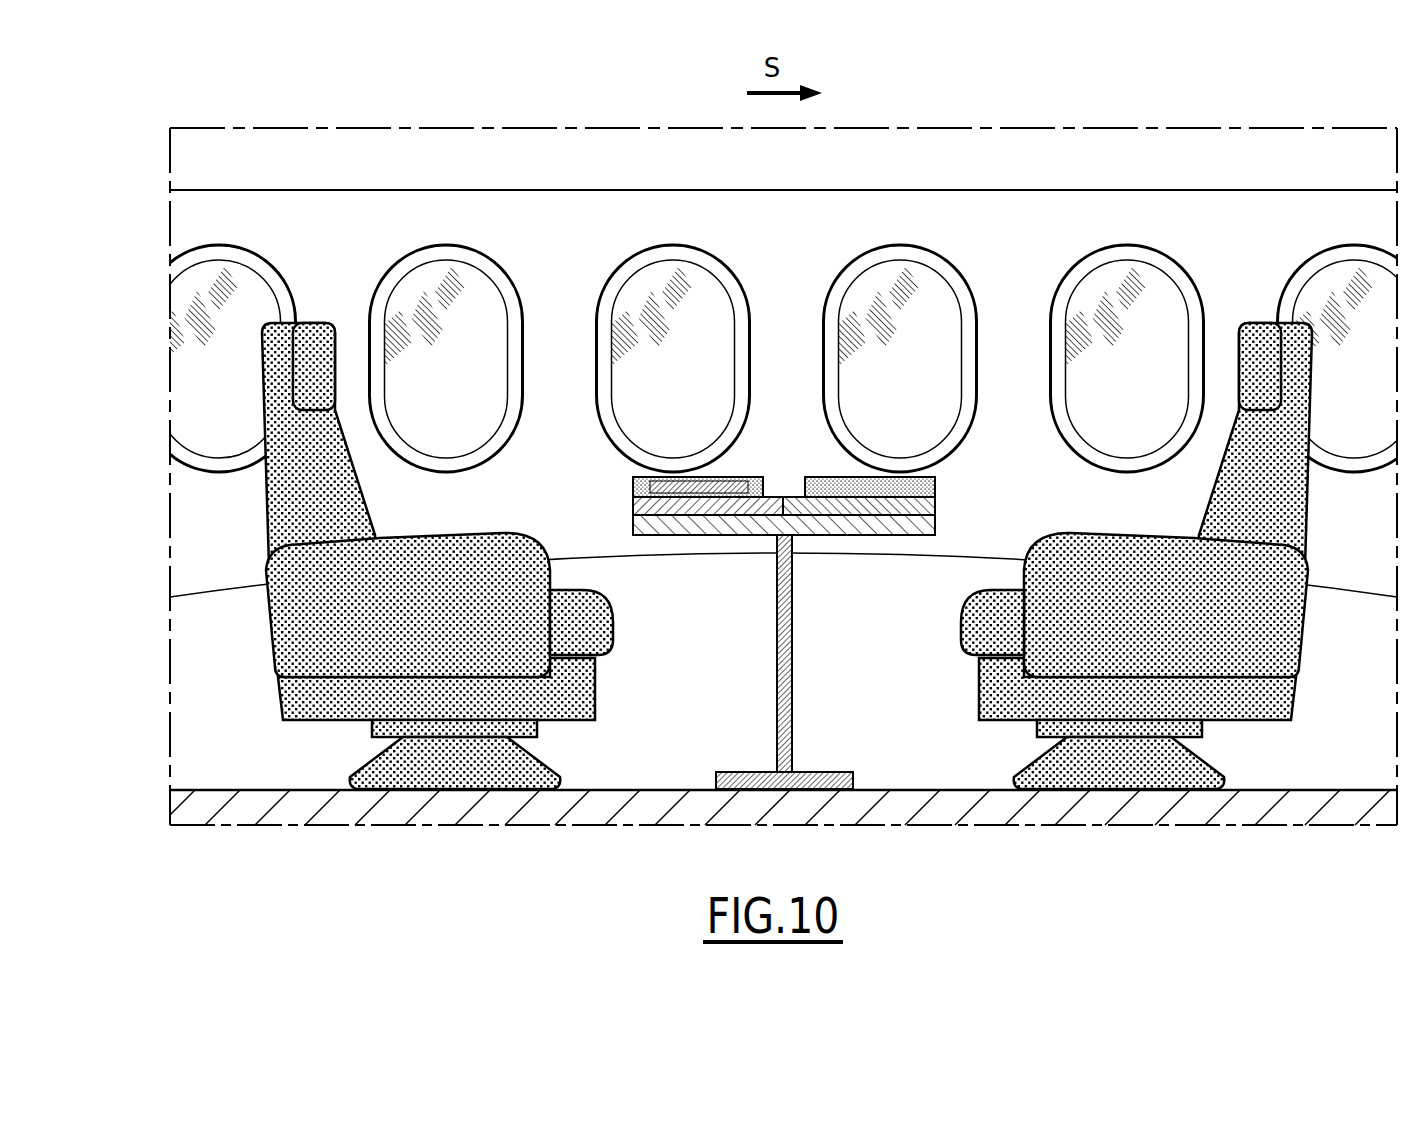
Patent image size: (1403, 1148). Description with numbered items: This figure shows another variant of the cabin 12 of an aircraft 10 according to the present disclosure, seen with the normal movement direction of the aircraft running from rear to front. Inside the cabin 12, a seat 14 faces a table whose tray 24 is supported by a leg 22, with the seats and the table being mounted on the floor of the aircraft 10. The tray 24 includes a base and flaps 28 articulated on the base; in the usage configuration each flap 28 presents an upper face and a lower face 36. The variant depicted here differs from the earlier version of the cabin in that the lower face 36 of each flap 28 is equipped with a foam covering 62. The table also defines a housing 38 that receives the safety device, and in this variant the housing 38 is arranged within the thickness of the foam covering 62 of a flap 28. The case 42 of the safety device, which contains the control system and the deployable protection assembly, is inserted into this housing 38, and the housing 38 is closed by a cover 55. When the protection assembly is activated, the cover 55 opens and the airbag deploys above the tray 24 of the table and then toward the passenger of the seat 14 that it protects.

The aircraft 10 is at (800, 253).
The cabin 12 is at (961, 156).
The seat 14 is at (297, 645).
The leg 22 is at (810, 688).
The tray 24 is at (767, 588).
The flap 28 is at (684, 503).
The lower face 36 is at (786, 497).
The housing 38 is at (722, 507).
The case 42 is at (662, 442).
The cover 55 is at (708, 478).
The foam covering 62 is at (936, 482).